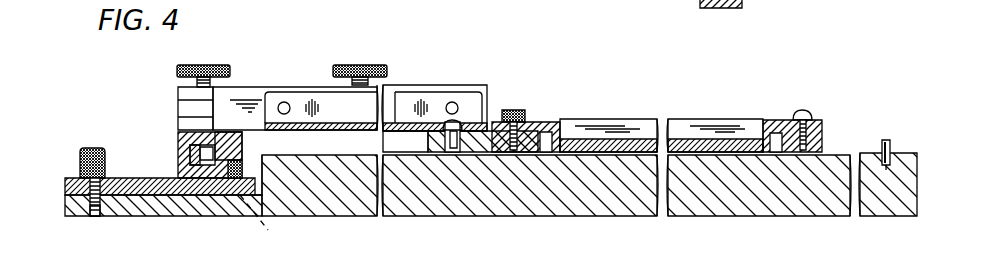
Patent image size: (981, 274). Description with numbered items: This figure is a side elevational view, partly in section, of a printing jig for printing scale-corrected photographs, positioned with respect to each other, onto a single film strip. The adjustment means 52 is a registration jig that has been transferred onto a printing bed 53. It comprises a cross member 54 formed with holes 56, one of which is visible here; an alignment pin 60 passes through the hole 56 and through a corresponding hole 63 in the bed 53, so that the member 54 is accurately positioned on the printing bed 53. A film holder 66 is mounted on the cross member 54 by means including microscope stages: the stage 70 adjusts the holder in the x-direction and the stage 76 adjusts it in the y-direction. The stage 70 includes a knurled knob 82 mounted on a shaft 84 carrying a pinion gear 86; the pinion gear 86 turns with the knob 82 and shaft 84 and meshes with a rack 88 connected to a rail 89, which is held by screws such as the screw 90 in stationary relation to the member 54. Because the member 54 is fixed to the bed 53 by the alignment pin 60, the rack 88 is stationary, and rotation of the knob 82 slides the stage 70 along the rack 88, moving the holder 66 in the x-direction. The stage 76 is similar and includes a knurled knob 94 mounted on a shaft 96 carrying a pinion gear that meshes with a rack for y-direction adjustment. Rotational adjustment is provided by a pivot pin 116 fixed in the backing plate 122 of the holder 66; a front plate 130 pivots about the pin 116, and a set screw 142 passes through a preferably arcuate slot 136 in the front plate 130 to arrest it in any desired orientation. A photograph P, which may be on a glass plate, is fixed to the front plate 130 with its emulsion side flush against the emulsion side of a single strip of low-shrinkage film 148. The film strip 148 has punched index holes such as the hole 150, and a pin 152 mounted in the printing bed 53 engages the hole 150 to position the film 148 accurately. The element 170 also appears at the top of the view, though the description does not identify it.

The adjustment means 52 is at (170, 103).
The printing bed 53 is at (633, 216).
The cross member 54 is at (141, 178).
The holes 56 is at (108, 188).
The alignment pin 60 is at (89, 148).
The hole 63 is at (95, 216).
The film holder 66 is at (774, 120).
The microscope stage 70 is at (186, 146).
The stage 76 is at (268, 87).
The knurled knob 82 is at (226, 65).
The shaft 84 is at (196, 81).
The pinion gear 86 is at (208, 155).
The rack 88 is at (191, 160).
The rail 89 is at (242, 142).
The screw 90 is at (268, 225).
The knurled knob 94 is at (363, 65).
The shaft 96 is at (376, 86).
The pivot pin 116 is at (808, 112).
The backing plate 122 is at (428, 143).
The front plate 130 is at (545, 120).
The slot 136 is at (497, 120).
The set screw 142 is at (513, 120).
The film strip 148 is at (903, 153).
The index hole 150 is at (886, 170).
The pin 152 is at (884, 140).
The knob 170 is at (722, 8).
The photograph P is at (690, 139).